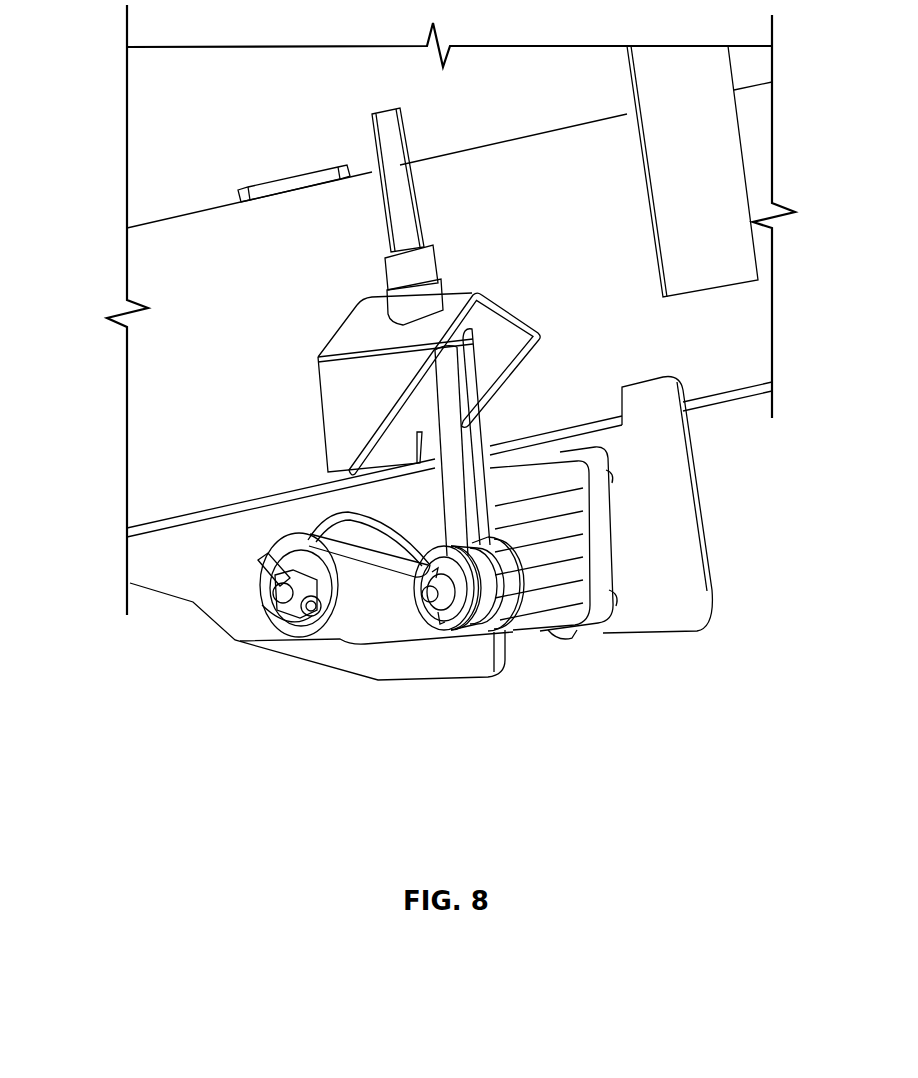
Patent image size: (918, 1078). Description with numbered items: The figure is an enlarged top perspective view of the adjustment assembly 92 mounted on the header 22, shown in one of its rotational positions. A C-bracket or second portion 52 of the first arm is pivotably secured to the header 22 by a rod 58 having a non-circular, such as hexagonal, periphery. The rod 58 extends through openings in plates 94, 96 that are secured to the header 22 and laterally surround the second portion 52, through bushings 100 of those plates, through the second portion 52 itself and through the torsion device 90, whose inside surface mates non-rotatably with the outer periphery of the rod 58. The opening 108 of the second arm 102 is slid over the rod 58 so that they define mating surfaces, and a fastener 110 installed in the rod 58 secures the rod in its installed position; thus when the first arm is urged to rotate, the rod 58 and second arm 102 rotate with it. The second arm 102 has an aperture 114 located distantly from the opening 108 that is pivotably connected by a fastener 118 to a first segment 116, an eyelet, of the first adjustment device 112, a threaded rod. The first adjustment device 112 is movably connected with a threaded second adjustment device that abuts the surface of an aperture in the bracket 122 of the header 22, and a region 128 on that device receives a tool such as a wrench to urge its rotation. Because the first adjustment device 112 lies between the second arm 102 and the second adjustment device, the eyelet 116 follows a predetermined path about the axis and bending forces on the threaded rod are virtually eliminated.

The header 22 is at (229, 121).
The region 128 is at (418, 276).
The bracket 122 is at (542, 330).
The first adjustment device 112 is at (450, 483).
The plate 94 is at (700, 487).
The bushing 100 is at (328, 518).
The second arm 102 is at (290, 543).
The rod 58 is at (280, 597).
The opening 108 is at (283, 622).
The fastener 110 is at (309, 614).
The plate 96 is at (312, 660).
The adjustment assembly 92 is at (364, 692).
The fastener 118 is at (425, 595).
The aperture 114 is at (445, 618).
The torsion device 90 is at (540, 627).
The first segment 116 is at (452, 503).
The second portion 52 is at (612, 584).